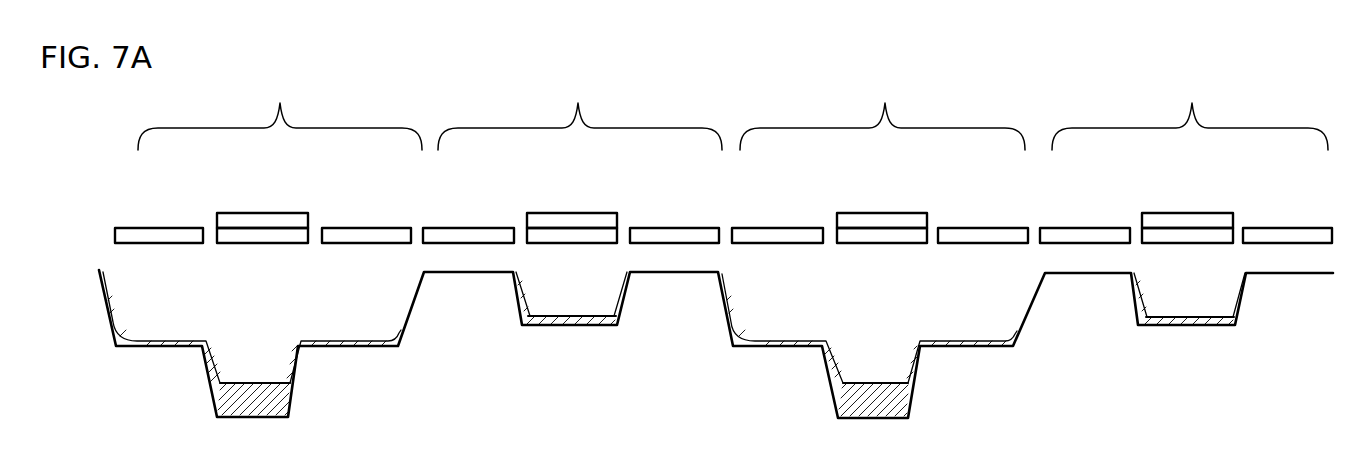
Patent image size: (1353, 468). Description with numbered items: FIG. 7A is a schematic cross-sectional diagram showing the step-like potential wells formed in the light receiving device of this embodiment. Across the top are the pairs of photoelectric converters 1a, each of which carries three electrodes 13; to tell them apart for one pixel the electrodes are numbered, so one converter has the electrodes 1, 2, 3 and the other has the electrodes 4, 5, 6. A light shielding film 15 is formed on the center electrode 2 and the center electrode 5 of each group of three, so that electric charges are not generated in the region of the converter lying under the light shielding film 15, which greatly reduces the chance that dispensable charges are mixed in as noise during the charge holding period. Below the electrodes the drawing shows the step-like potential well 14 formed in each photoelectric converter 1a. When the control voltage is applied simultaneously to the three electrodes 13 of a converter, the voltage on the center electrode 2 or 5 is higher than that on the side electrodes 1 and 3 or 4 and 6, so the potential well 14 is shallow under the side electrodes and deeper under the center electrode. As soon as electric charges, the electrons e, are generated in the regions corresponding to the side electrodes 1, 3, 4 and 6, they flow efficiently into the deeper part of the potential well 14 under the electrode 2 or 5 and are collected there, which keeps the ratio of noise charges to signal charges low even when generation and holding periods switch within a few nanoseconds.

The photoelectric converter 1a is at (733, 102).
The electrode 1 is at (469, 200).
The center electrode 2 is at (572, 200).
The electrode 3 is at (675, 200).
The electrode 4 is at (776, 201).
The center electrode 5 is at (880, 201).
The electrode 6 is at (981, 201).
The electrode 13 is at (723, 235).
The potential well 14 is at (1153, 302).
The light shielding film 15 is at (1167, 222).
The electrons e is at (1201, 325).